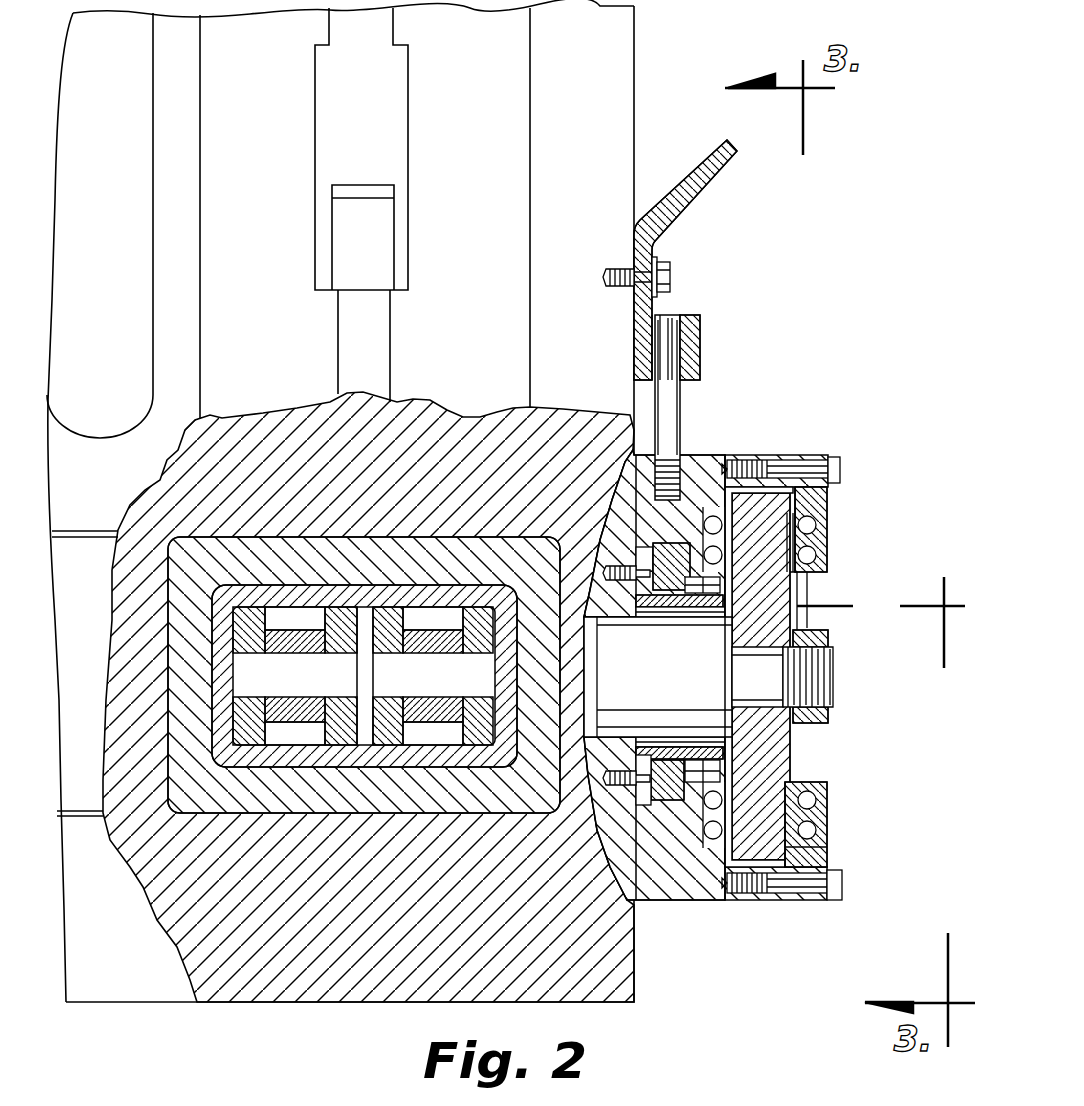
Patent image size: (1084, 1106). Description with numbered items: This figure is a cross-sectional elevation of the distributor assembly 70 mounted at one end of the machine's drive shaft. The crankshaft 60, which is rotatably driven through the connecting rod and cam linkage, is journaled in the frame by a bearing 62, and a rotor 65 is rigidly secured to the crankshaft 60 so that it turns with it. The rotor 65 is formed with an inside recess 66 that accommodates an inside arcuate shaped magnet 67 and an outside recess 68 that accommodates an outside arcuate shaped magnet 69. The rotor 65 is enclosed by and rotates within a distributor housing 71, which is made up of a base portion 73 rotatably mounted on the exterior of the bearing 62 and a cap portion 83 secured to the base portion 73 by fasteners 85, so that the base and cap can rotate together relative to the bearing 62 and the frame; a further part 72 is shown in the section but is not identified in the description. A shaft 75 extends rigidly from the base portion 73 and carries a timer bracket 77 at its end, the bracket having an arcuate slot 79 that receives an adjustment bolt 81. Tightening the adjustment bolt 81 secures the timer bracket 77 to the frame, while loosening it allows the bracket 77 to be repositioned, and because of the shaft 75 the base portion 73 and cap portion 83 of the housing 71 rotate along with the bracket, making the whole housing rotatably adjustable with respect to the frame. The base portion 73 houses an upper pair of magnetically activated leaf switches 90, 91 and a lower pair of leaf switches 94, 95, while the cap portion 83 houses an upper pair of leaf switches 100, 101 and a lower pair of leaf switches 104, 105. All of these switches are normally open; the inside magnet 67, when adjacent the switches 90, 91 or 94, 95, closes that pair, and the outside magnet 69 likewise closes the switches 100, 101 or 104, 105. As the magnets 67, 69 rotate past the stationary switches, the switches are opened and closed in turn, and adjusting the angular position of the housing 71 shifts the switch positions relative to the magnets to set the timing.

The crankshaft 60 is at (683, 660).
The bearing 62 is at (677, 752).
The rotor 65 is at (793, 733).
The inside recess 66 is at (727, 537).
The inside arcuate shaped magnet 67 is at (740, 550).
The outside recess 68 is at (826, 537).
The outside arcuate shaped magnet 69 is at (812, 800).
The distributor assembly 70 is at (858, 612).
The distributor housing 71 is at (712, 900).
The flange 72 is at (790, 793).
The base portion 73 is at (695, 465).
The shaft 75 is at (680, 393).
The timer bracket 77 is at (707, 190).
The arcuate slot 79 is at (634, 272).
The adjustment bolt 81 is at (670, 278).
The cap portion 83 is at (828, 856).
The fasteners 85 is at (843, 896).
The magnetically activated leaf switch 90 is at (704, 522).
The magnetically activated leaf switch 91 is at (704, 553).
The magnetically activated leaf switch 94 is at (705, 801).
The magnetically activated leaf switch 95 is at (712, 839).
The magnetically activated leaf switch 100 is at (825, 513).
The magnetically activated leaf switch 101 is at (826, 548).
The magnetically activated leaf switch 104 is at (826, 798).
The magnetically activated leaf switch 105 is at (826, 830).